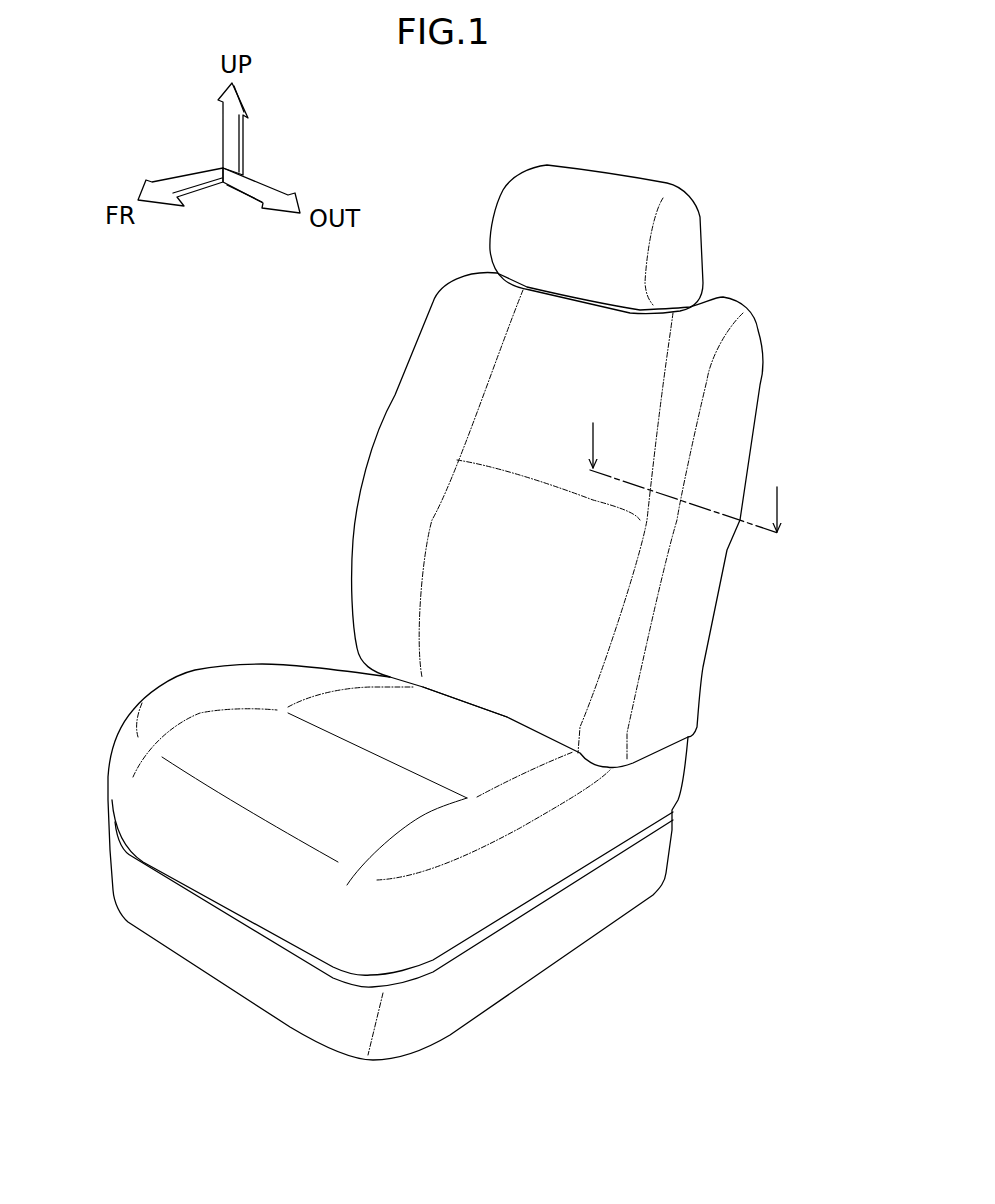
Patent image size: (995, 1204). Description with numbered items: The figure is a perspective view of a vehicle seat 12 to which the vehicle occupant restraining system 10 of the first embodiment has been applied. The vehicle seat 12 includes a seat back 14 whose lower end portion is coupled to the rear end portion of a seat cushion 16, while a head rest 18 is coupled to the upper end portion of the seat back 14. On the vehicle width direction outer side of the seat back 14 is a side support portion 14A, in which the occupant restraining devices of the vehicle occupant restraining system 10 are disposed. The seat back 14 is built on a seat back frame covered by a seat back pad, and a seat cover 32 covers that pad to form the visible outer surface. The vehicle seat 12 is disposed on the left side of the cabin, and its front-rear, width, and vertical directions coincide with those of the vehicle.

The vehicle occupant restraining system 10 is at (705, 553).
The vehicle seat 12 is at (257, 368).
The seat back 14 is at (377, 438).
The side support portion 14A is at (642, 560).
The seat cushion 16 is at (197, 670).
The head rest 18 is at (607, 176).
The seat cover 32 is at (477, 683).